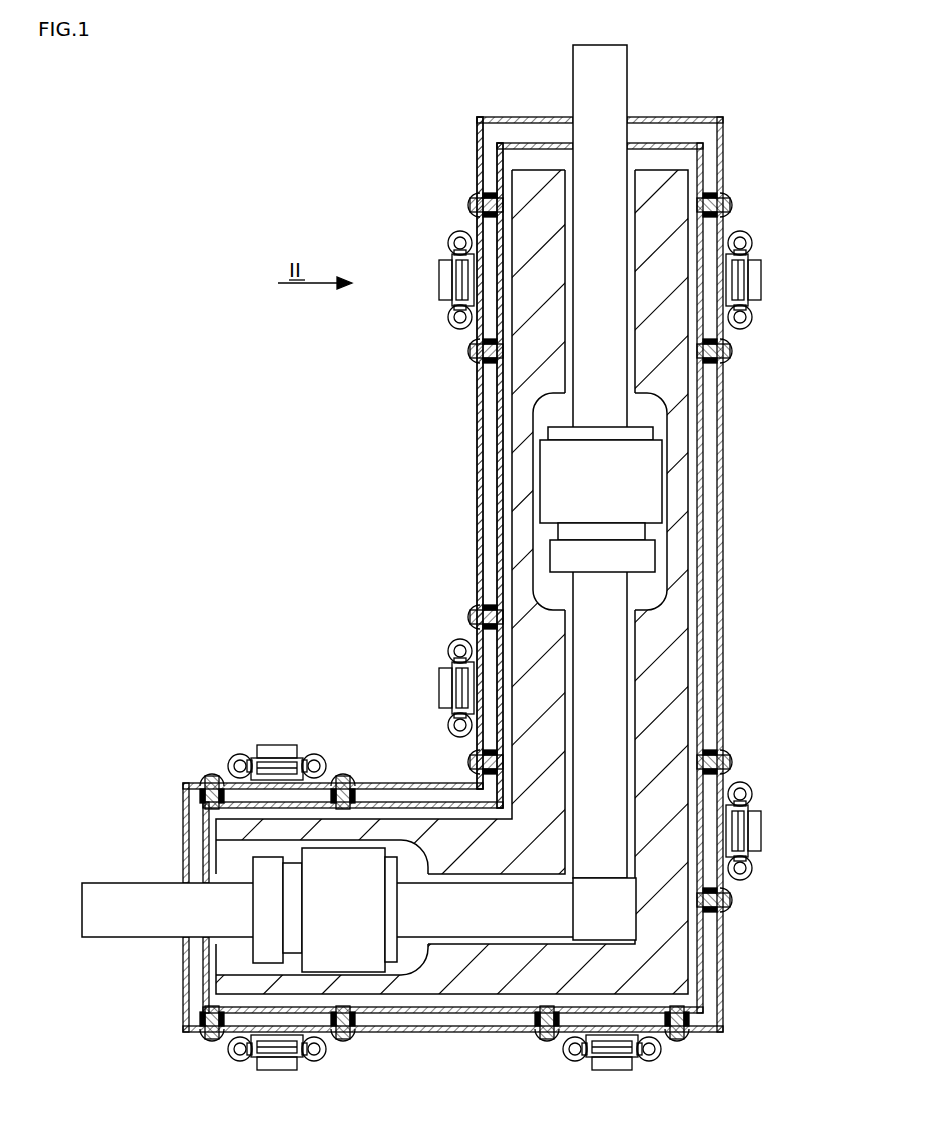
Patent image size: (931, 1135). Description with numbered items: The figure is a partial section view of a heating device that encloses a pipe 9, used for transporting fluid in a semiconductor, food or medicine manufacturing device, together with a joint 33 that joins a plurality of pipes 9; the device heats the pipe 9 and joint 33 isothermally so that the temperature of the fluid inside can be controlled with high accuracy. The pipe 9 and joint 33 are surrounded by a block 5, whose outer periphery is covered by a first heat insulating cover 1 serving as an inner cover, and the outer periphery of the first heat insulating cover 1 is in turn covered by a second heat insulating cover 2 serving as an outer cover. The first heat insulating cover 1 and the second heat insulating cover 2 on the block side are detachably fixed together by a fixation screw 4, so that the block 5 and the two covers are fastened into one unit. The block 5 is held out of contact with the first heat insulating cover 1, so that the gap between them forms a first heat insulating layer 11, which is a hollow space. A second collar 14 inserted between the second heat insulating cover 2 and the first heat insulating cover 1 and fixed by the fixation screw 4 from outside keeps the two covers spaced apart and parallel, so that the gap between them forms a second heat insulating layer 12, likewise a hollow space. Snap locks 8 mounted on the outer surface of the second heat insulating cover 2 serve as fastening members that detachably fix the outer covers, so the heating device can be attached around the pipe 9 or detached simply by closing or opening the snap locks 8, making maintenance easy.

The first heat insulating cover 1 is at (708, 576).
The second heat insulating cover 2 is at (726, 625).
The fixation screw 4 is at (730, 350).
The block 5 is at (525, 450).
The snap lock 8 is at (443, 282).
The pipe 9 is at (608, 78).
The first heat insulating layer 11 is at (510, 492).
The second heat insulating layer 12 is at (492, 537).
The second collar 14 is at (712, 363).
The joint 33 is at (638, 477).